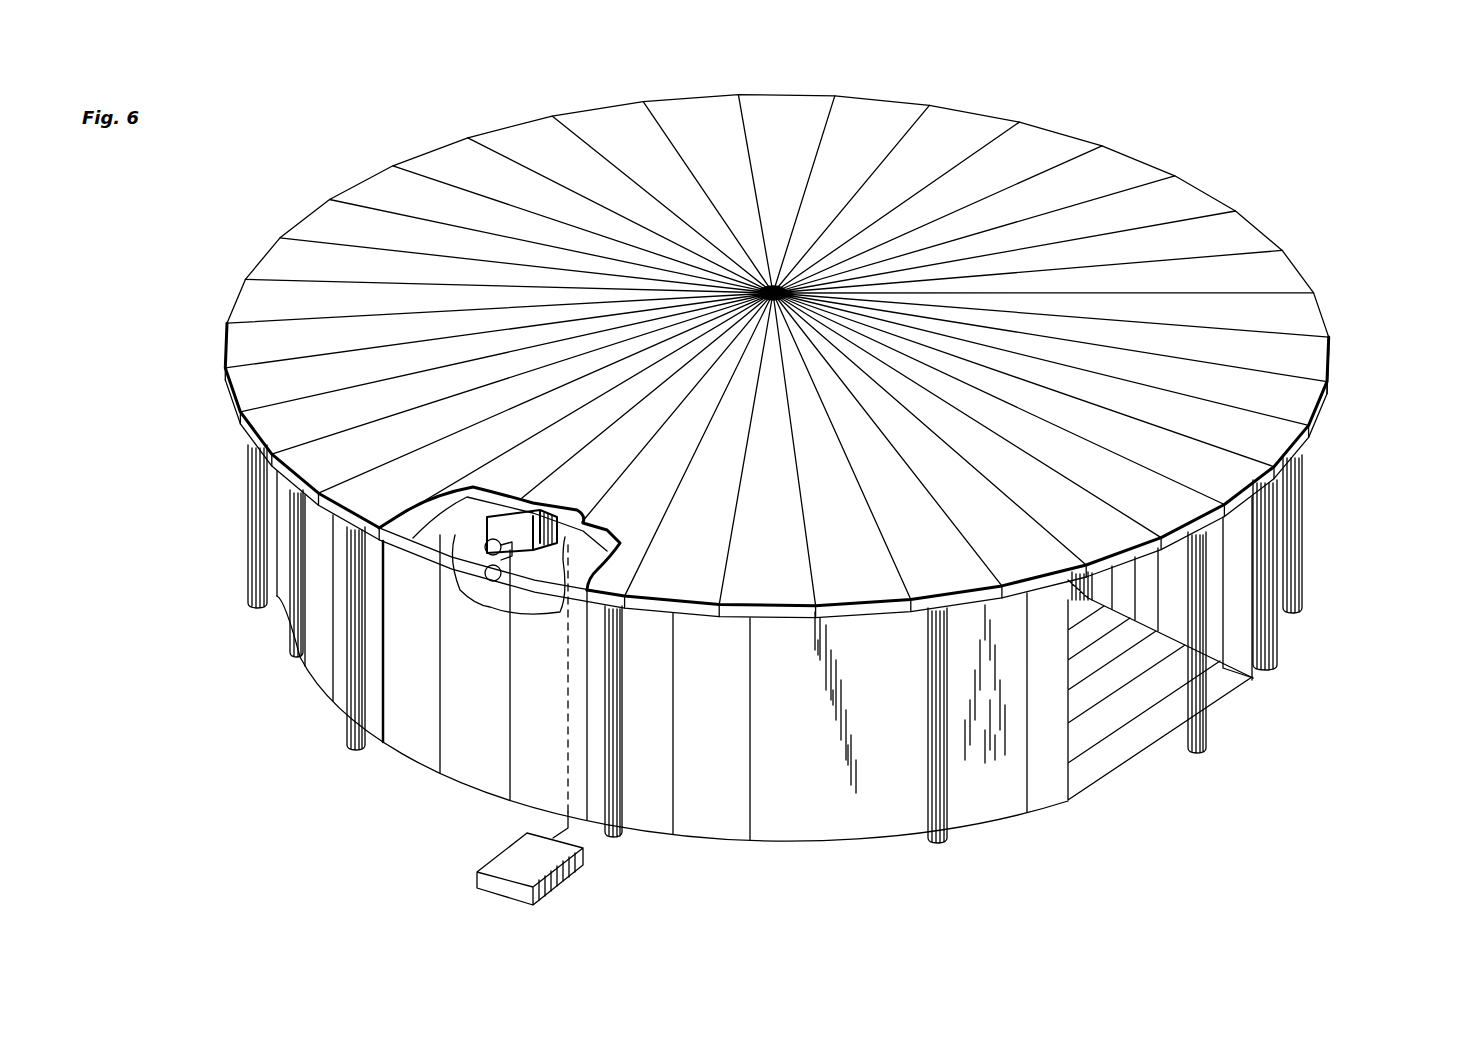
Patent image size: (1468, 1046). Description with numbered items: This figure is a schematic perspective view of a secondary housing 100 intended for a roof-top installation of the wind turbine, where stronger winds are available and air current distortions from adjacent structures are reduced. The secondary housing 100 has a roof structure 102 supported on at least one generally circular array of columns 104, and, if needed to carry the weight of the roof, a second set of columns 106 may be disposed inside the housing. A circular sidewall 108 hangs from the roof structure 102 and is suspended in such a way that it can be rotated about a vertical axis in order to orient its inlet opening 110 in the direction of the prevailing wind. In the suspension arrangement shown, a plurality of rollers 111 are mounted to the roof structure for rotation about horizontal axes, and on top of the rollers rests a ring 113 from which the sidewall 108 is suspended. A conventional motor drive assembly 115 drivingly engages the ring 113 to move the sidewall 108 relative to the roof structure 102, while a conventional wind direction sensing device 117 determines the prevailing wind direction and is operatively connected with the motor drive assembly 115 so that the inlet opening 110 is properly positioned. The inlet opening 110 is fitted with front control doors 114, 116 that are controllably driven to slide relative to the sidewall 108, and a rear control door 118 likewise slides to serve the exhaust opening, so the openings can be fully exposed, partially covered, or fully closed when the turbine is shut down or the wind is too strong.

The secondary housing 100 is at (1198, 197).
The roof structure 102 is at (1031, 140).
The columns 104 is at (257, 507).
The second set of columns 106 is at (1090, 573).
The sidewall 108 is at (300, 580).
The inlet opening 110 is at (1120, 758).
The rollers 111 is at (485, 570).
The ring 113 is at (485, 518).
The inlet opening control door 114 is at (873, 825).
The motor drive assembly 115 is at (495, 590).
The inlet opening control door 116 is at (1277, 543).
The wind direction sensing device 117 is at (500, 867).
The exhaust opening control door 118 is at (285, 547).